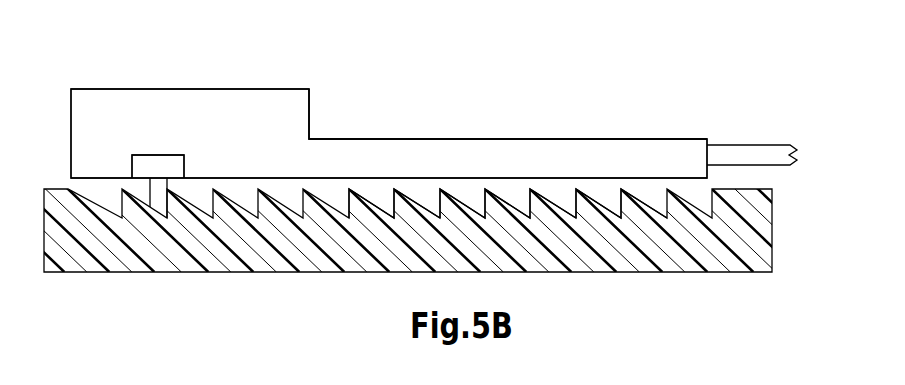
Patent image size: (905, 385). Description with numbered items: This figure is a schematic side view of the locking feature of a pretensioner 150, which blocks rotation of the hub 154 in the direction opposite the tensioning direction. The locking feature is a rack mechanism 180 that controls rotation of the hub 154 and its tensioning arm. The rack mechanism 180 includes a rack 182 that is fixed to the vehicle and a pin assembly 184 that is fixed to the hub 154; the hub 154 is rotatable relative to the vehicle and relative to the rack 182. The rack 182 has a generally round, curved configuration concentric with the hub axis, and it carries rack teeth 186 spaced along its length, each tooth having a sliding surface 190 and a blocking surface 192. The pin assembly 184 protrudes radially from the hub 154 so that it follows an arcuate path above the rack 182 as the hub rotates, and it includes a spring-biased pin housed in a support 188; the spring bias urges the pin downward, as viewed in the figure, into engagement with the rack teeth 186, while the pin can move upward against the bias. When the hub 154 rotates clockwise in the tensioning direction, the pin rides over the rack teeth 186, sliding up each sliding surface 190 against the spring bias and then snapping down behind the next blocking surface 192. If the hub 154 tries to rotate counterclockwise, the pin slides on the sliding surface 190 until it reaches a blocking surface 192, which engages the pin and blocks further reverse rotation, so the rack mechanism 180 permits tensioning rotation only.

The pretensioner 150 is at (160, 56).
The hub 154 is at (283, 112).
The rack mechanism 180 is at (106, 67).
The rack 182 is at (248, 253).
The pin assembly 184 is at (170, 135).
The rack teeth 186 is at (158, 167).
The support 188 is at (157, 194).
The sliding surface 190 is at (370, 192).
The blocking surface 192 is at (650, 192).